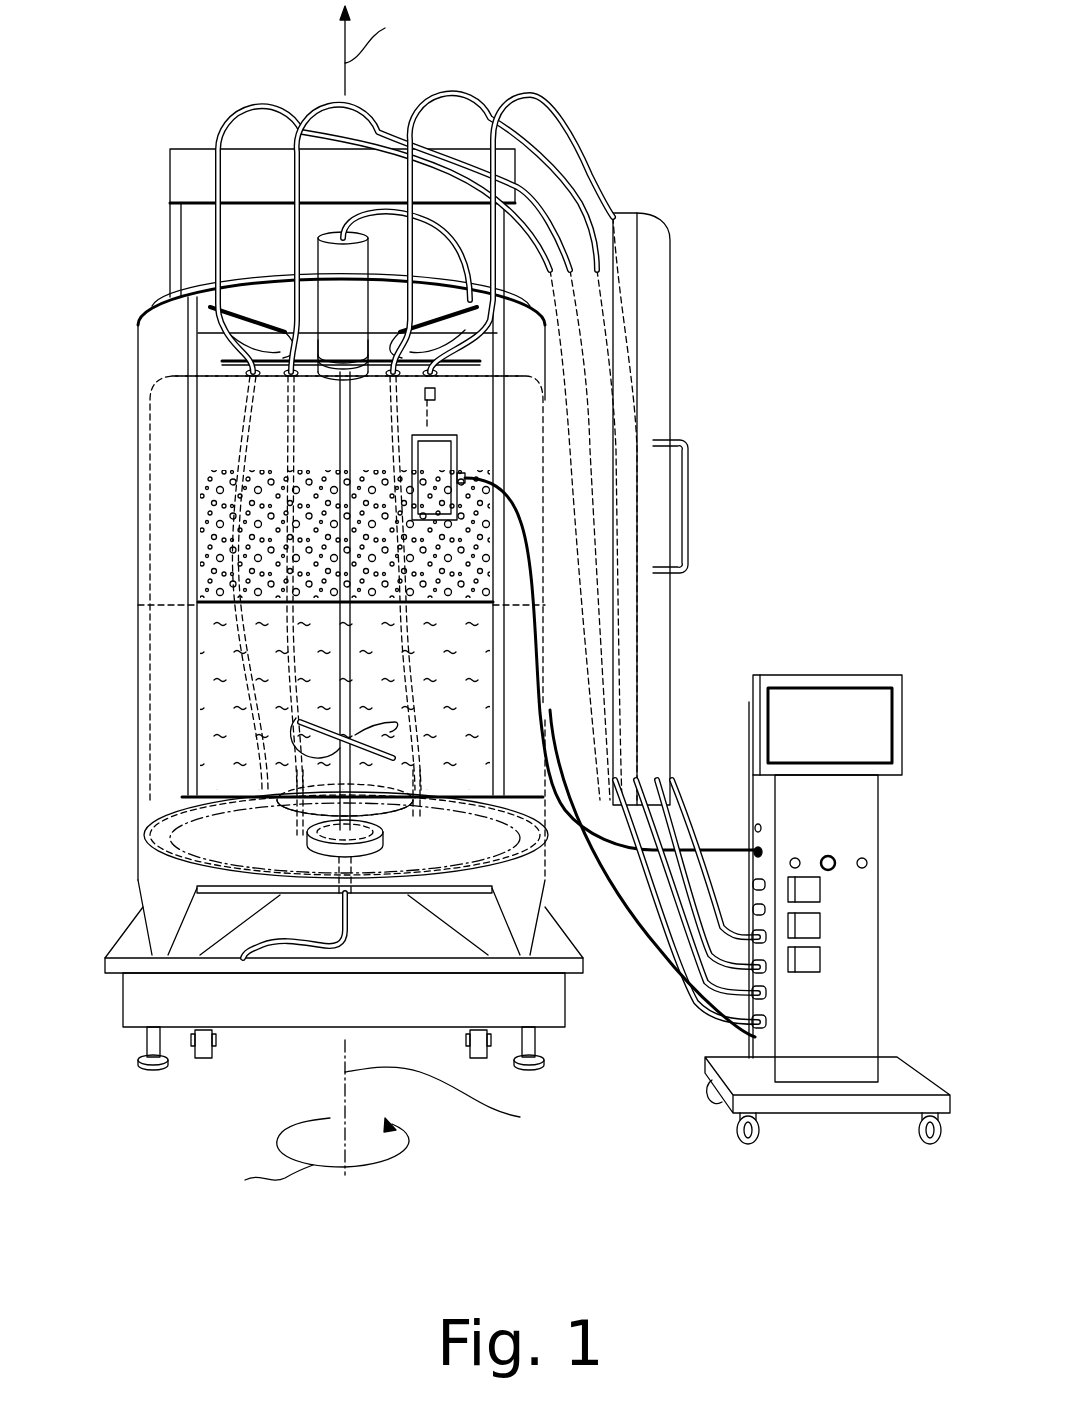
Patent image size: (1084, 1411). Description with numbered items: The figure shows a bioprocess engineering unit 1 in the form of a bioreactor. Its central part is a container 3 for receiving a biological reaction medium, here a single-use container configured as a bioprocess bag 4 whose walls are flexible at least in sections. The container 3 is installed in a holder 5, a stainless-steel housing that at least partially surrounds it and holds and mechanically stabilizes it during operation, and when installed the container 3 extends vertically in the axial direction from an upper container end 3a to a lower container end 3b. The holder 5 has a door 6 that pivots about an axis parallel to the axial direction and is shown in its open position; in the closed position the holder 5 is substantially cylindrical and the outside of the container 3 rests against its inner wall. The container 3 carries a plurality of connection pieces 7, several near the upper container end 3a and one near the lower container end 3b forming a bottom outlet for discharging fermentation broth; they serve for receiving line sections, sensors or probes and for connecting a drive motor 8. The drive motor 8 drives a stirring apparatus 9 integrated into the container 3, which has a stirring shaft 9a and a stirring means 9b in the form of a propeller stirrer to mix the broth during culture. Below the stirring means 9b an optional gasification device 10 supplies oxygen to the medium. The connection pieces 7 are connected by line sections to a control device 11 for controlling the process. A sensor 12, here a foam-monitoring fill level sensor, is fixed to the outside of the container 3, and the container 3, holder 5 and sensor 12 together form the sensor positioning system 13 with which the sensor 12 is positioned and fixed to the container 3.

The bioprocess engineering unit 1 is at (753, 152).
The container 3 is at (165, 423).
The bioprocess bag 4 is at (295, 351).
The upper container end 3a is at (207, 357).
The lower container end 3b is at (200, 848).
The holder 5 is at (165, 322).
The door 6 is at (658, 244).
The connection pieces 7 is at (430, 388).
The drive motor 8 is at (337, 260).
The stirring apparatus 9 is at (95, 635).
The stirring shaft 9a is at (340, 630).
The stirring means 9b is at (305, 757).
The gasification device 10 is at (170, 833).
The control device 11 is at (849, 661).
The sensor 12 is at (440, 467).
The sensor positioning system 13 is at (727, 336).